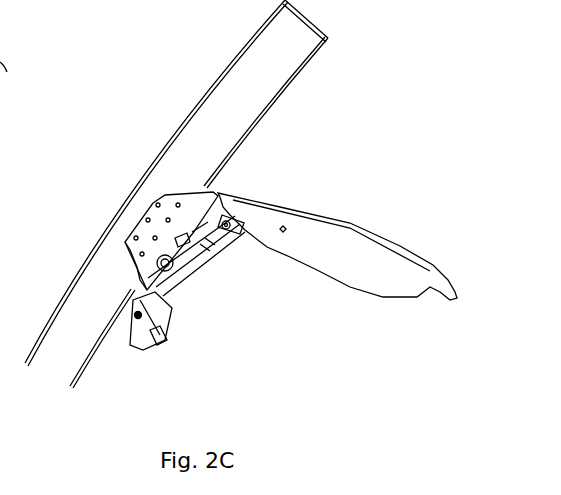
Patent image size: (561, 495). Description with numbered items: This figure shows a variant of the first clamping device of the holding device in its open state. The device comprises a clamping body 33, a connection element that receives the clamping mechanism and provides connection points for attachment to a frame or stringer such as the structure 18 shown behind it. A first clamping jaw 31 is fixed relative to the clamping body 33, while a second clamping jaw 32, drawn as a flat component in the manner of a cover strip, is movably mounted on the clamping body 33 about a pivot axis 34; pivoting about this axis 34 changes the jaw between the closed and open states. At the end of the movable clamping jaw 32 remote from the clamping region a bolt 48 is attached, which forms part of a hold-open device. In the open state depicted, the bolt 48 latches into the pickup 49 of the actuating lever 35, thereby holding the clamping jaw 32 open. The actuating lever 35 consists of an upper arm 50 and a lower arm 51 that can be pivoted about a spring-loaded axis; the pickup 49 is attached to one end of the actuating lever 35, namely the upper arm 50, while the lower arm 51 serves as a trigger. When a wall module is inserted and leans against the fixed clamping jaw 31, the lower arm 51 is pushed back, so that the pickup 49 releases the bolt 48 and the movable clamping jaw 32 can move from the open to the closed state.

The windshield pillar / frame 18 is at (294, 53).
The first clamping jaw 31 is at (170, 317).
The second clamping jaw 32 is at (392, 272).
The clamping body 33 is at (165, 210).
The pivot axis 34 is at (283, 217).
The actuating lever 35 is at (143, 287).
The bolt 48 is at (232, 238).
The pickup 49 is at (165, 263).
The upper arm 50 is at (202, 233).
The lower arm 51 is at (138, 315).